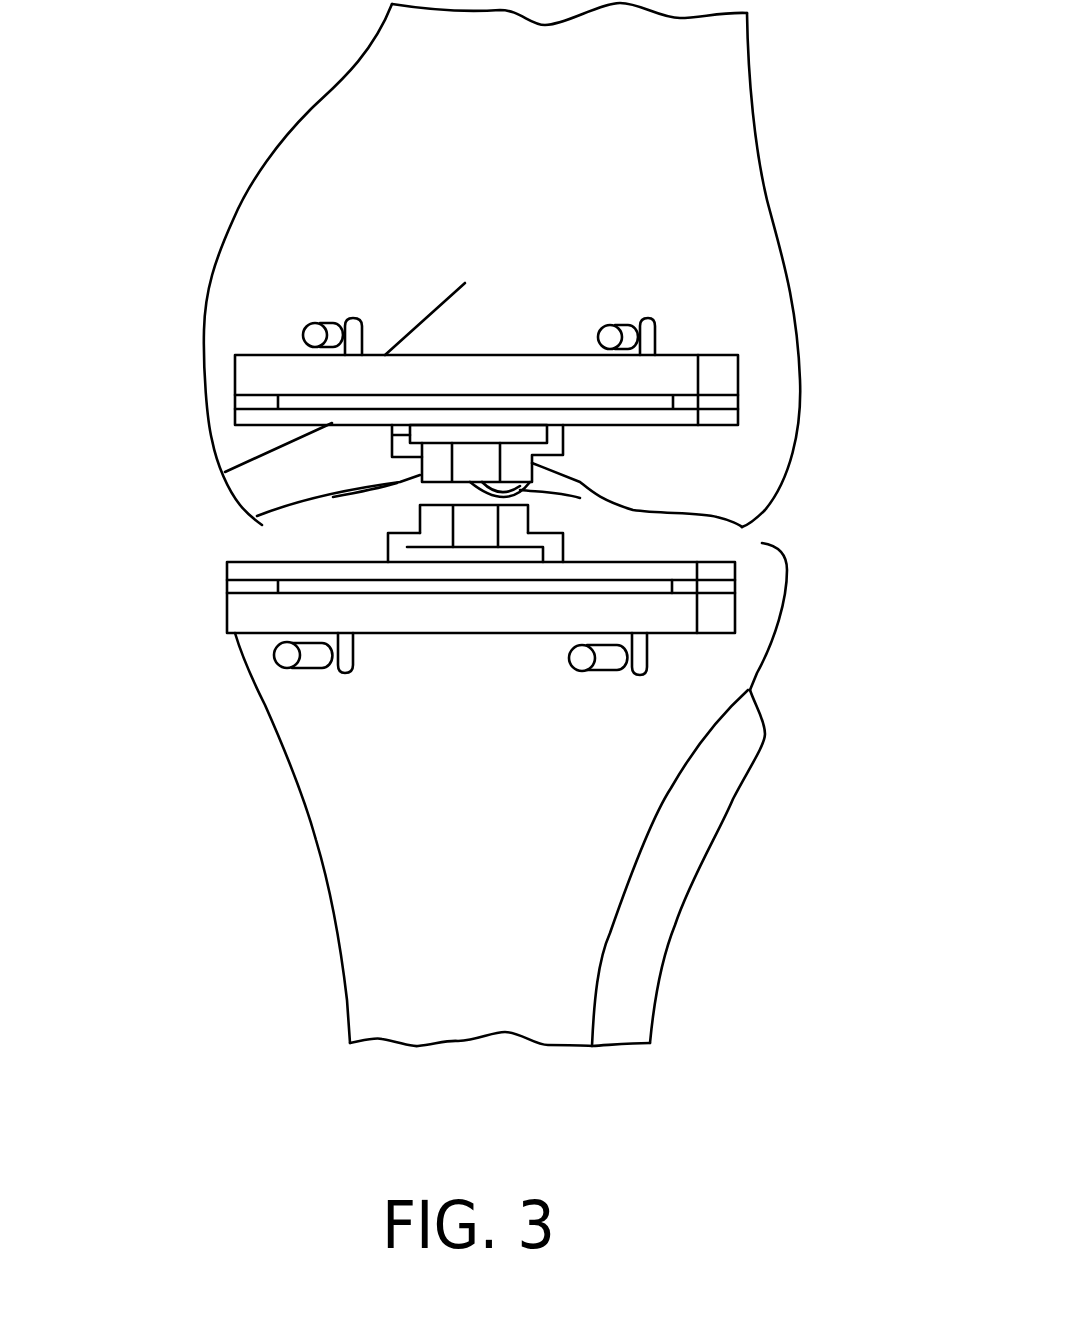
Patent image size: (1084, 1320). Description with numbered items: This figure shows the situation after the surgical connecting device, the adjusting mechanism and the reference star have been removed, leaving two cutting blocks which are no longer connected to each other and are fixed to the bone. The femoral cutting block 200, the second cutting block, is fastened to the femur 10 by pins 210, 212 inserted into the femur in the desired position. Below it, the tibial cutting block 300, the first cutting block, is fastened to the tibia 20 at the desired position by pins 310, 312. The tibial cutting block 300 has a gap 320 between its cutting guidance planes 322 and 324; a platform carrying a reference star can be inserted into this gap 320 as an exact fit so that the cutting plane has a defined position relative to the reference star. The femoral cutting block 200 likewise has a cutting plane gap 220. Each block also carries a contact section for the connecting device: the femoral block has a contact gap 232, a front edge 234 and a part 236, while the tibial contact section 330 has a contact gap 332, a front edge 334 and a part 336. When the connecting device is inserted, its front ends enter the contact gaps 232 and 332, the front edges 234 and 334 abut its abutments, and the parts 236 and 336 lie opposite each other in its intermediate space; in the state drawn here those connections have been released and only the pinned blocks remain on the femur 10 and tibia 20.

The femur 10 is at (690, 120).
The tibia 20 is at (604, 832).
The femoral cutting block 200 is at (516, 396).
The pin 210 is at (303, 335).
The pin 212 is at (607, 330).
The cutting plane gap 220 is at (650, 405).
The contact gap 232 is at (420, 450).
The front edge 234 is at (420, 467).
The part of contact section 236 is at (565, 493).
The tibial cutting block 300 is at (459, 597).
The pin 310 is at (283, 663).
The pin 312 is at (593, 675).
The gap 320 is at (388, 440).
The cutting guidance plane 322 is at (650, 580).
The cutting guidance plane 324 is at (630, 600).
The contact section 330 is at (478, 535).
The contact gap 332 is at (407, 548).
The front edge 334 is at (445, 568).
The part of contact section 336 is at (420, 521).